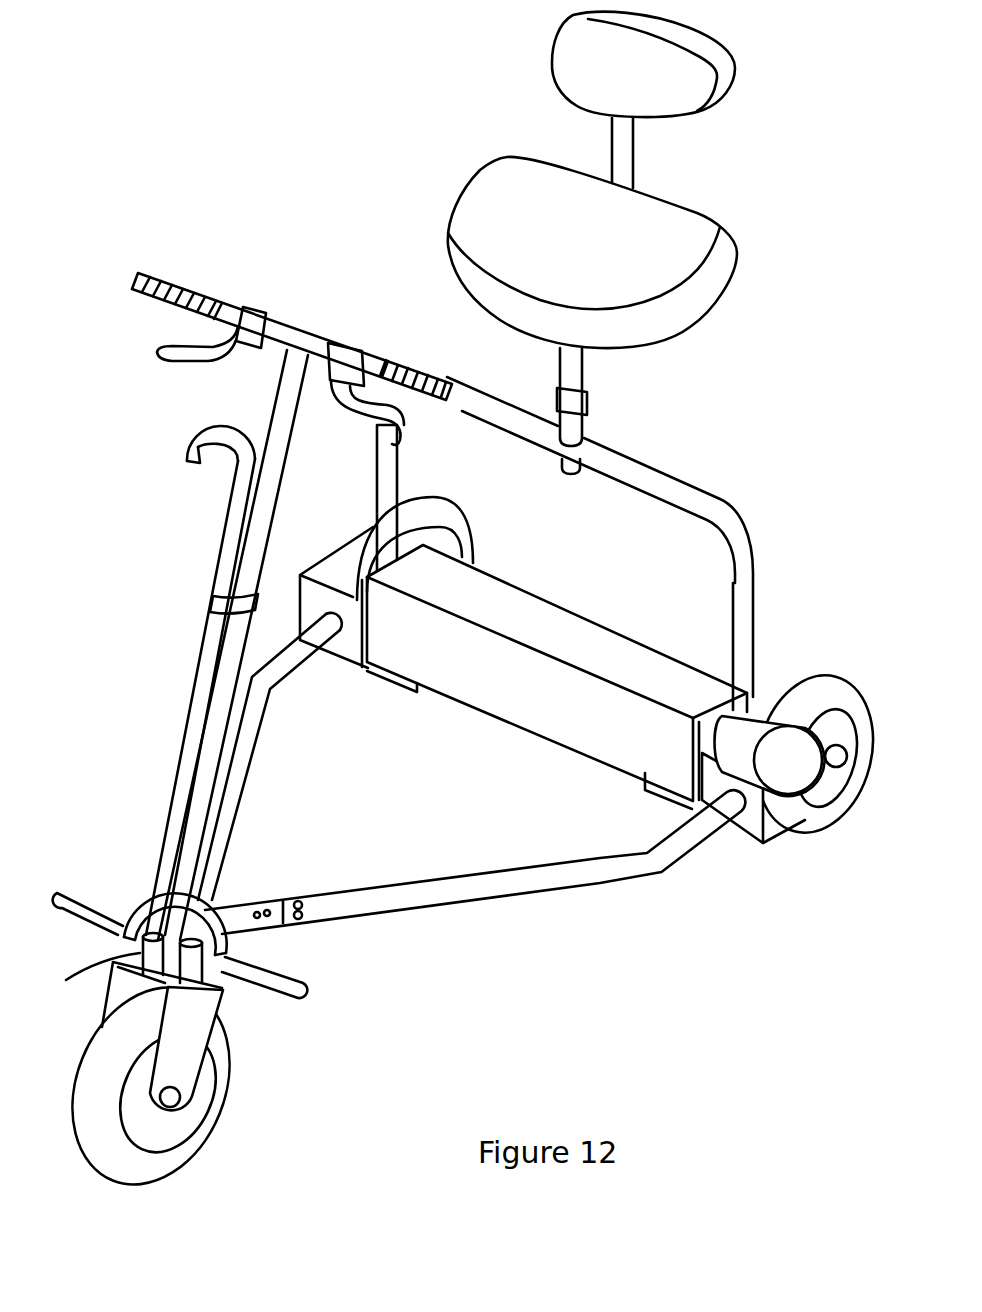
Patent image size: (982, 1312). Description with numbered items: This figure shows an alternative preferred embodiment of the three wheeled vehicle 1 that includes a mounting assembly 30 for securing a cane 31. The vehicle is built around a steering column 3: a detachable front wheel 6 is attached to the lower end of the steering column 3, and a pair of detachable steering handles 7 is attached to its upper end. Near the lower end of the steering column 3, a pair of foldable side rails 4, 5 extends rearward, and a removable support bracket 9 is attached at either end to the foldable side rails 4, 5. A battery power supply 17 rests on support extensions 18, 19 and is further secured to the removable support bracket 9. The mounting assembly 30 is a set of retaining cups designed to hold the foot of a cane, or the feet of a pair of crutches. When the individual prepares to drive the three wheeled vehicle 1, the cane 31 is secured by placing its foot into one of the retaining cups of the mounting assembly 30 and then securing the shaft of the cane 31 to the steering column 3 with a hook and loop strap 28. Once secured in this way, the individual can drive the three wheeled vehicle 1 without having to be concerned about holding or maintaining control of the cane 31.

The three wheeled vehicle 1 is at (229, 168).
The steering column 3 is at (222, 720).
The foldable side rail 4 is at (515, 885).
The foldable side rail 5 is at (262, 682).
The detachable front wheel 6 is at (200, 1017).
The detachable steering handles 7 is at (190, 293).
The removable support bracket 9 is at (696, 503).
The battery power supply 17 is at (584, 633).
The support extension 18 is at (402, 678).
The support extension 19 is at (665, 790).
The hook and loop strap 28 is at (220, 600).
The mounting assembly 30 is at (140, 948).
The cane 31 is at (200, 443).